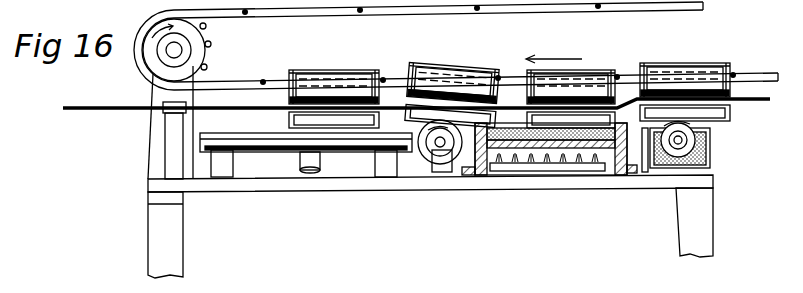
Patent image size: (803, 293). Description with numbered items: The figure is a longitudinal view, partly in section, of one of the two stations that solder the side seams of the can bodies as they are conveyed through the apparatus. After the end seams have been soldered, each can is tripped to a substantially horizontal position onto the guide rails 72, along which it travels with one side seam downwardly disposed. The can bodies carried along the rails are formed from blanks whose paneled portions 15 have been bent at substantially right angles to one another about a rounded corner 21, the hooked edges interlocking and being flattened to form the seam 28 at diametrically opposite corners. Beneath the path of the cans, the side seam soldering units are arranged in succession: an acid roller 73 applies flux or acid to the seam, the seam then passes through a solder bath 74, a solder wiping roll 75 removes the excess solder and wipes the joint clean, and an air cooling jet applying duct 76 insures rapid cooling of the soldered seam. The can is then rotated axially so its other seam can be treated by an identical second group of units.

The paneled portion 15 is at (553, 85).
The rounded corner 21 is at (297, 95).
The flattened interlocking seam 28 is at (428, 60).
The guide rails 72 is at (110, 109).
The acid roller 73 is at (692, 141).
The solder bath 74 is at (515, 133).
The solder wiping roll 75 is at (437, 153).
The air cooling jet applying duct 76 is at (273, 138).